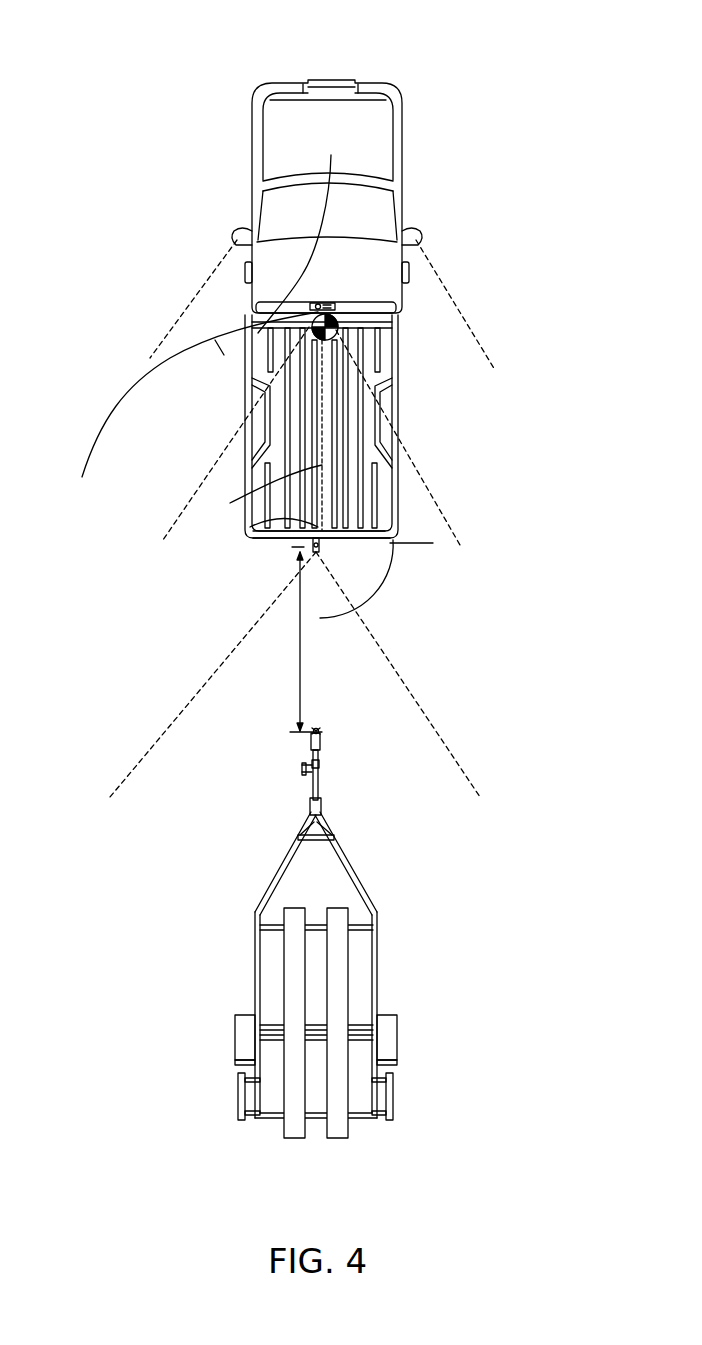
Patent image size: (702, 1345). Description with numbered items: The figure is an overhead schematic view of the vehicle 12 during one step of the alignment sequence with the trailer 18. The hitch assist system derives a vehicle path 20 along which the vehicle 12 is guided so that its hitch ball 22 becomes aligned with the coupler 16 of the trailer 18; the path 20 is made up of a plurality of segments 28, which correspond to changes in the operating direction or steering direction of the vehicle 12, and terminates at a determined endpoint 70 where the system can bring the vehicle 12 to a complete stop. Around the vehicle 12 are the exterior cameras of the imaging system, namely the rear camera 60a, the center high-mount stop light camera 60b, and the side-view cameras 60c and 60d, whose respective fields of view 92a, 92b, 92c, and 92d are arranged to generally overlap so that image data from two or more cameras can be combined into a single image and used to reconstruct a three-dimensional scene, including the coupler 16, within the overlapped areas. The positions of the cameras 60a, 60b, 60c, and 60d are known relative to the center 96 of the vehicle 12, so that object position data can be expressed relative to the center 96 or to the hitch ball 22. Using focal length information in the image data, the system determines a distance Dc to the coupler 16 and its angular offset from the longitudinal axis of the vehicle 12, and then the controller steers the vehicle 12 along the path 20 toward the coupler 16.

The vehicle 12 is at (314, 289).
The coupler 16 is at (320, 735).
The trailer 18 is at (302, 933).
The vehicle path 20 is at (334, 443).
The hitch ball 22 is at (307, 540).
The segments 28 is at (293, 288).
The rear camera 60a is at (318, 538).
The center high-mount stop light camera 60b is at (322, 303).
The side-view camera 60c is at (418, 244).
The side-view camera 60d is at (230, 244).
The endpoint 70 is at (250, 526).
The field of view 92a is at (224, 663).
The field of view 92b is at (172, 525).
The field of view 92c is at (470, 332).
The field of view 92d is at (160, 342).
The center 96 is at (338, 323).
The distance to coupler Dc is at (300, 686).